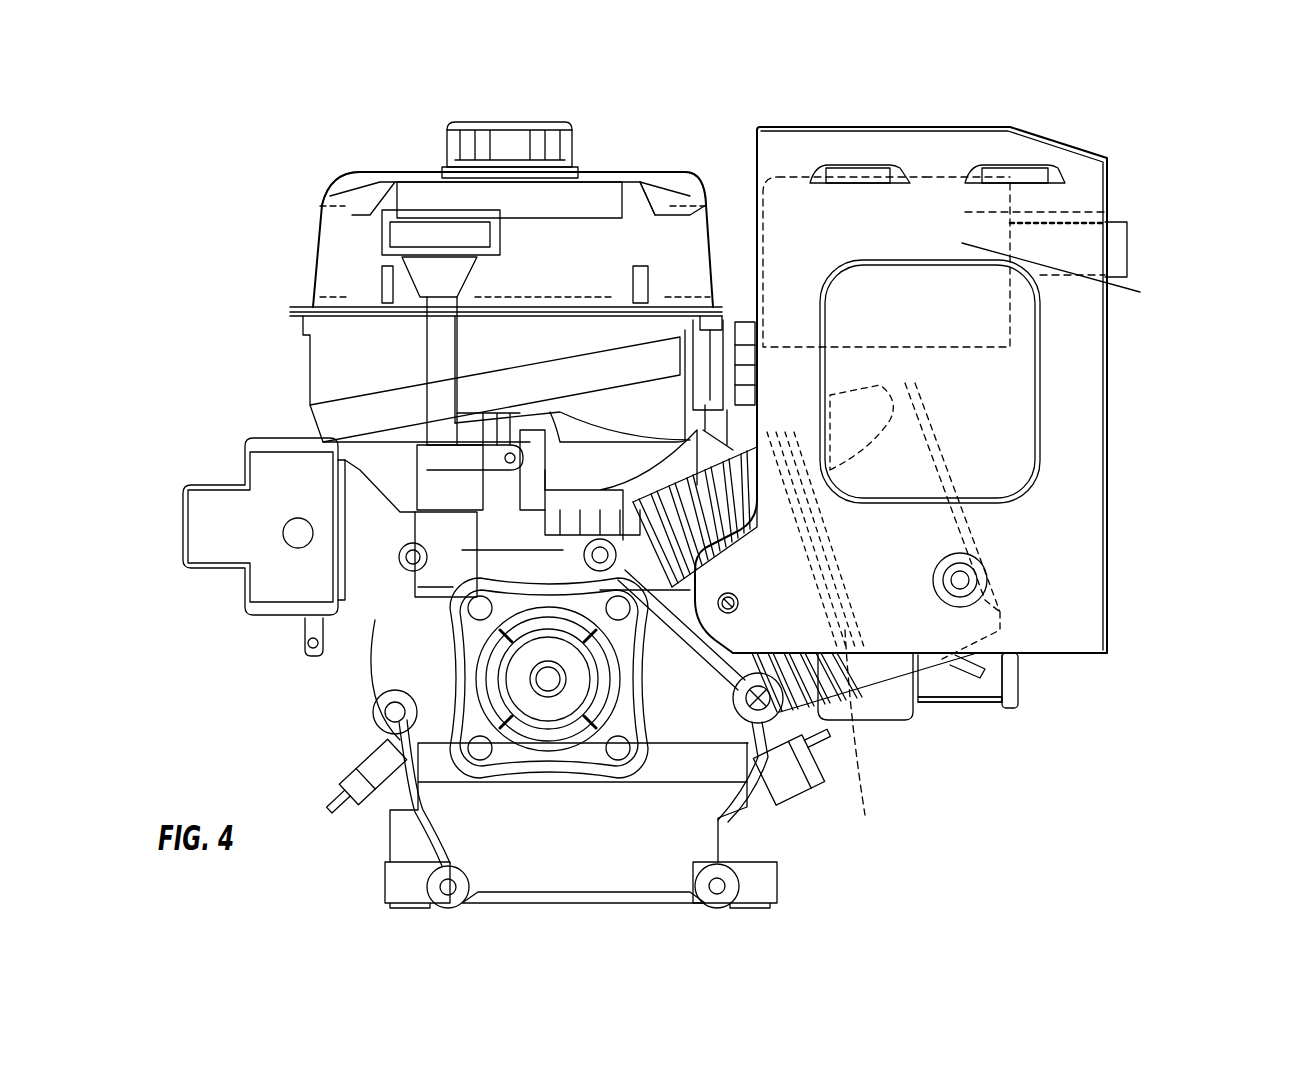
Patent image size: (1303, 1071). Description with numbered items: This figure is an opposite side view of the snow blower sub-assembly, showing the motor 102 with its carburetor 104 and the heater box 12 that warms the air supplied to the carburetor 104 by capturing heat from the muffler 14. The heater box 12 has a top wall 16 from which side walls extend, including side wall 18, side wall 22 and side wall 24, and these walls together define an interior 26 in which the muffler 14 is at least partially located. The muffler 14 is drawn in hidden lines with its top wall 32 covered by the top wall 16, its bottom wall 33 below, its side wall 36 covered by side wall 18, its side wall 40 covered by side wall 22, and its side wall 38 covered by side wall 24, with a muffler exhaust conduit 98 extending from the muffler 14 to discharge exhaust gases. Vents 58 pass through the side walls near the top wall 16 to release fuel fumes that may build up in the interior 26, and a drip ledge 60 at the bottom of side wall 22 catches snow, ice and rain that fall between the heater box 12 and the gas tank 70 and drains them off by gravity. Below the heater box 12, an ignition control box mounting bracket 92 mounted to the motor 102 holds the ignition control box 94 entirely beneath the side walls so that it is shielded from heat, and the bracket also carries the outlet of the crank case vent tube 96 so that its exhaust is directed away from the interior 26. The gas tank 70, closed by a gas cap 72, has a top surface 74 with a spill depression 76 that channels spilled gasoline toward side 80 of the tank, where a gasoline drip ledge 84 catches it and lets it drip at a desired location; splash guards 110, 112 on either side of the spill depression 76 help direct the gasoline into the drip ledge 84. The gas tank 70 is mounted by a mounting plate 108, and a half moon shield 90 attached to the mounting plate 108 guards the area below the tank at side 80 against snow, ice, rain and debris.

The heater box 12 is at (878, 635).
The muffler 14 is at (1018, 315).
The top wall 16 is at (870, 125).
The side wall 18 is at (1108, 492).
The side wall 22 is at (754, 223).
The side wall 24 is at (1140, 292).
The interior 26 is at (1035, 170).
The top wall 32 is at (928, 174).
The bottom wall 33 is at (1040, 505).
The side wall 36 is at (1010, 245).
The side wall 38 is at (1010, 212).
The side wall 40 is at (754, 273).
The vents 58 is at (752, 185).
The drip ledge 60 is at (748, 337).
The gas tank 70 is at (535, 278).
The gas cap 72 is at (508, 128).
The top surface 74 is at (362, 165).
The spill depression 76 is at (596, 170).
The side 80 is at (637, 262).
The gasoline drip ledge 84 is at (550, 410).
The half moon shield 90 is at (561, 478).
The ignition control box mounting bracket 92 is at (957, 707).
The ignition control box 94 is at (1020, 685).
The crank case vent tube 96 is at (957, 677).
The muffler exhaust conduit 98 is at (1060, 280).
The motor 102 is at (716, 710).
The carburetor 104 is at (865, 745).
The mounting plate 108 is at (543, 503).
The splash guard 110 is at (410, 282).
The splash guard 112 is at (382, 276).